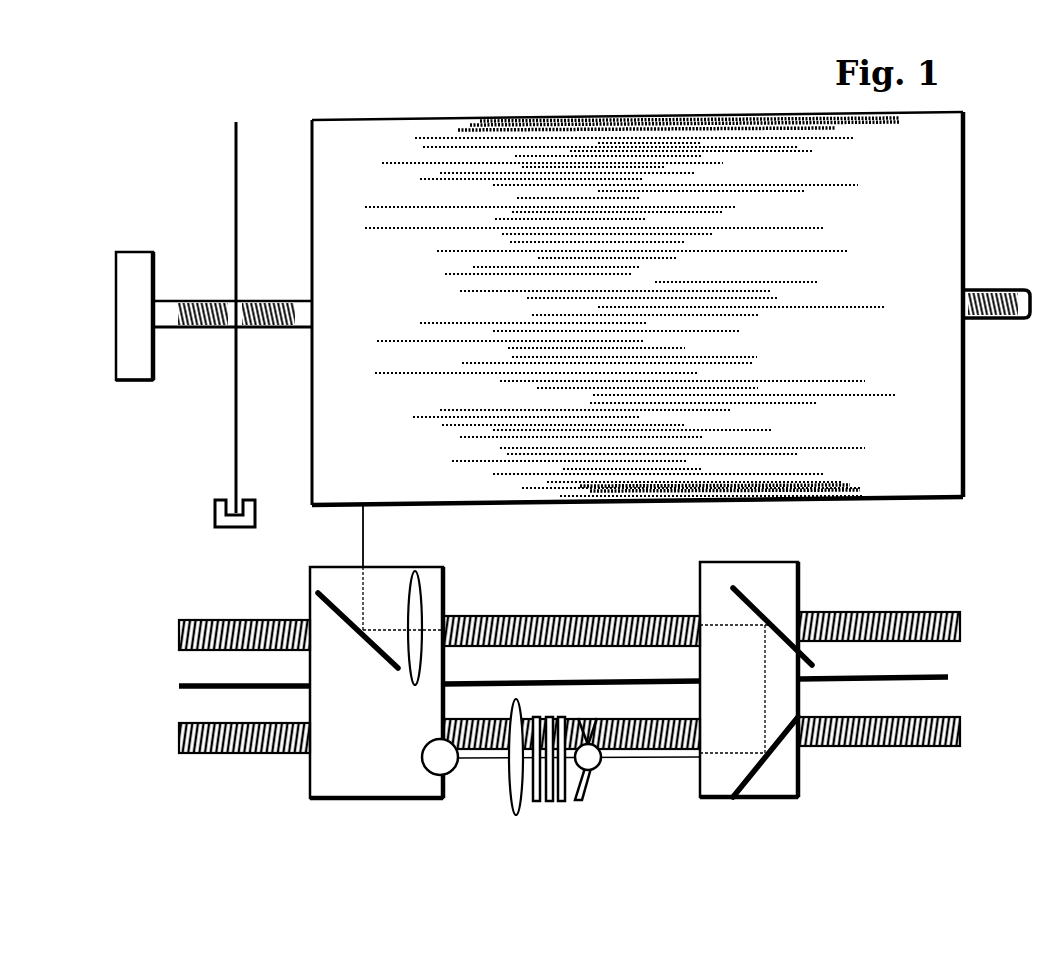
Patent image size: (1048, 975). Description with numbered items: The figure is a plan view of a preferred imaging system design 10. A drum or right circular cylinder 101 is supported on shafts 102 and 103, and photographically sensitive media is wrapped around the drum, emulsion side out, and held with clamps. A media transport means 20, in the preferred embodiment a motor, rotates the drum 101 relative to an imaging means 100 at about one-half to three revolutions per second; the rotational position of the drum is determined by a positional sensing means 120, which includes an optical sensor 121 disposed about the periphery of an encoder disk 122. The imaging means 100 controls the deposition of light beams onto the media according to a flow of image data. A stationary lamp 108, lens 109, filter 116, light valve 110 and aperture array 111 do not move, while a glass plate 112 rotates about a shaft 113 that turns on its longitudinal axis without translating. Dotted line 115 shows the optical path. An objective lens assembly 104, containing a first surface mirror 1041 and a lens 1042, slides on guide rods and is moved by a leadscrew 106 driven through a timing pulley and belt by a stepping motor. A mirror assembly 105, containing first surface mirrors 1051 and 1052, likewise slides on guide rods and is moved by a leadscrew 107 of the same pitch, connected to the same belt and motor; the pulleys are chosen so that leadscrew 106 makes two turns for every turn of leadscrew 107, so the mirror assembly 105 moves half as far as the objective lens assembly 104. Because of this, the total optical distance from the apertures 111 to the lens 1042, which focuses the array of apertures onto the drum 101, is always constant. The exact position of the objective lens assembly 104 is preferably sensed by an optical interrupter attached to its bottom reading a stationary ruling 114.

The imaging system design 10 is at (632, 99).
The media transport means 20 is at (150, 252).
The imaging means 100 is at (182, 826).
The drum 101 is at (452, 119).
The shaft 102 is at (170, 300).
The shaft 103 is at (980, 290).
The objective lens assembly 104 is at (310, 800).
The mirror assembly 105 is at (800, 792).
The leadscrew 106 is at (960, 624).
The leadscrew 107 is at (960, 728).
The lamp 108 is at (447, 775).
The lens 109 is at (516, 815).
The light valve 110 is at (548, 801).
The aperture array 111 is at (565, 801).
The glass plate 112 is at (585, 803).
The shaft 113 is at (598, 768).
The stationary ruling 114 is at (948, 679).
The dotted line 115 is at (363, 530).
The filter 116 is at (538, 717).
The positional sensing means 120 is at (182, 508).
The optical sensor 121 is at (255, 522).
The encoder disk 122 is at (236, 122).
The first surface mirror 1041 is at (352, 632).
The lens 1042 is at (416, 572).
The first surface mirror 1051 is at (770, 633).
The first surface mirror 1052 is at (772, 748).